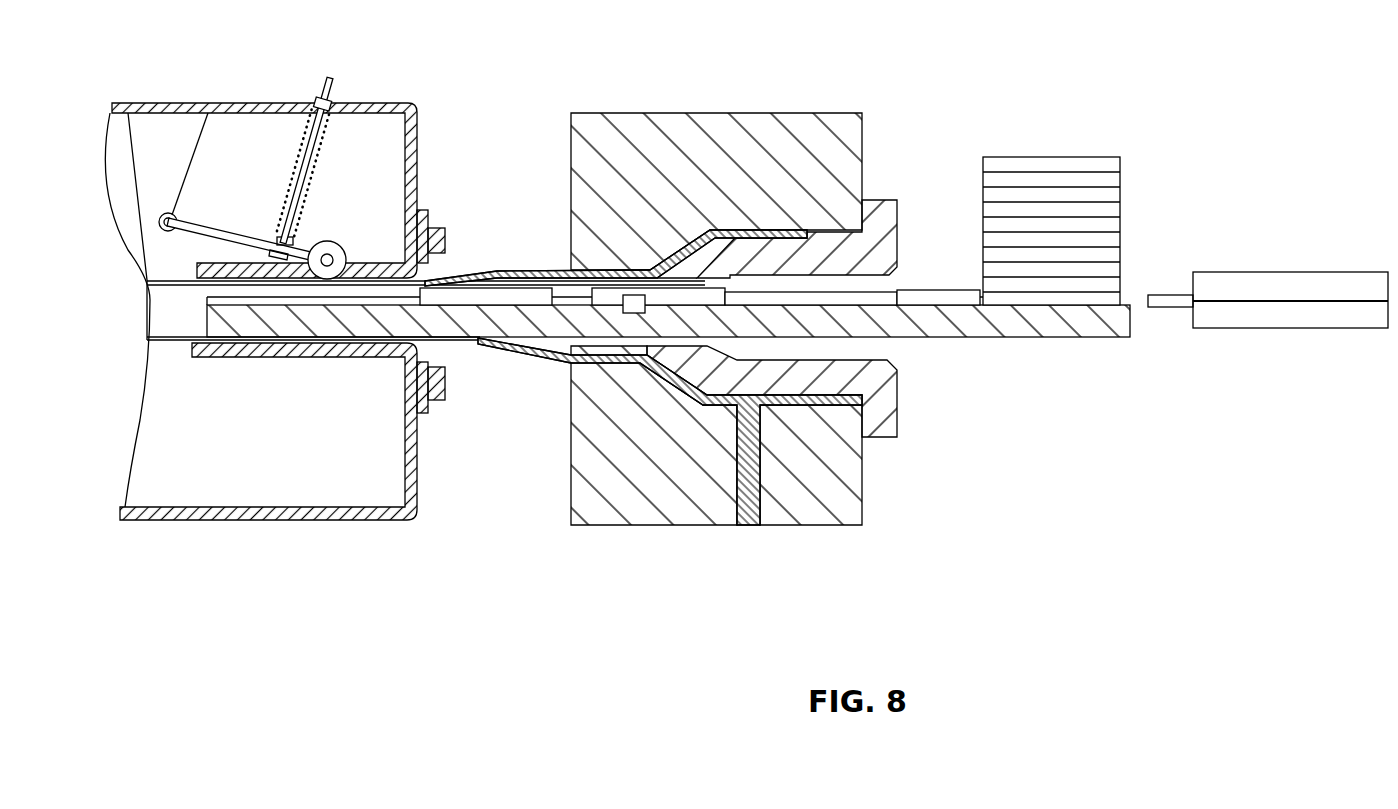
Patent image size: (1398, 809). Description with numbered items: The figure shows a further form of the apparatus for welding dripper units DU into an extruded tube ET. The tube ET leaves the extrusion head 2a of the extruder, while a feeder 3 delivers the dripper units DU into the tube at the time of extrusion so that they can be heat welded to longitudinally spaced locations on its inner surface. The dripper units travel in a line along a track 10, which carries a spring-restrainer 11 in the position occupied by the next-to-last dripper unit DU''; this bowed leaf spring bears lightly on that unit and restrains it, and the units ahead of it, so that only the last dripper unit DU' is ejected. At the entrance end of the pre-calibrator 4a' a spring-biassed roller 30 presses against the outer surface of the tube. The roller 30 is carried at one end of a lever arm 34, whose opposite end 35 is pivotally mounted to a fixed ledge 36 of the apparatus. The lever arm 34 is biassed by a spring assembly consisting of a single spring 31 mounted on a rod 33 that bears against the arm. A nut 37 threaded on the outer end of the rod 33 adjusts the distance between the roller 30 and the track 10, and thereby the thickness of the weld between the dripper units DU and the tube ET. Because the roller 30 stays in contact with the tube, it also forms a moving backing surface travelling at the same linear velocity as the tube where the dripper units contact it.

The extrusion head 2a is at (670, 115).
The feeder 3 is at (1247, 323).
The guide member 4a' is at (448, 288).
The track 10 is at (478, 330).
The spring-restrainer 11 is at (634, 296).
The spring-biassed roller 30 is at (325, 255).
The spring 31 is at (303, 157).
The rod 33 is at (320, 142).
The lever arm 34 is at (197, 217).
The pivot end of lever arm 35 is at (160, 230).
The fixed ledge 36 is at (208, 103).
The nut 37 is at (317, 102).
The dripper units DU is at (1030, 203).
The last dripper unit DU' is at (486, 266).
The next-to-last dripper unit DU'' is at (686, 205).
The extruded tube ET is at (540, 352).